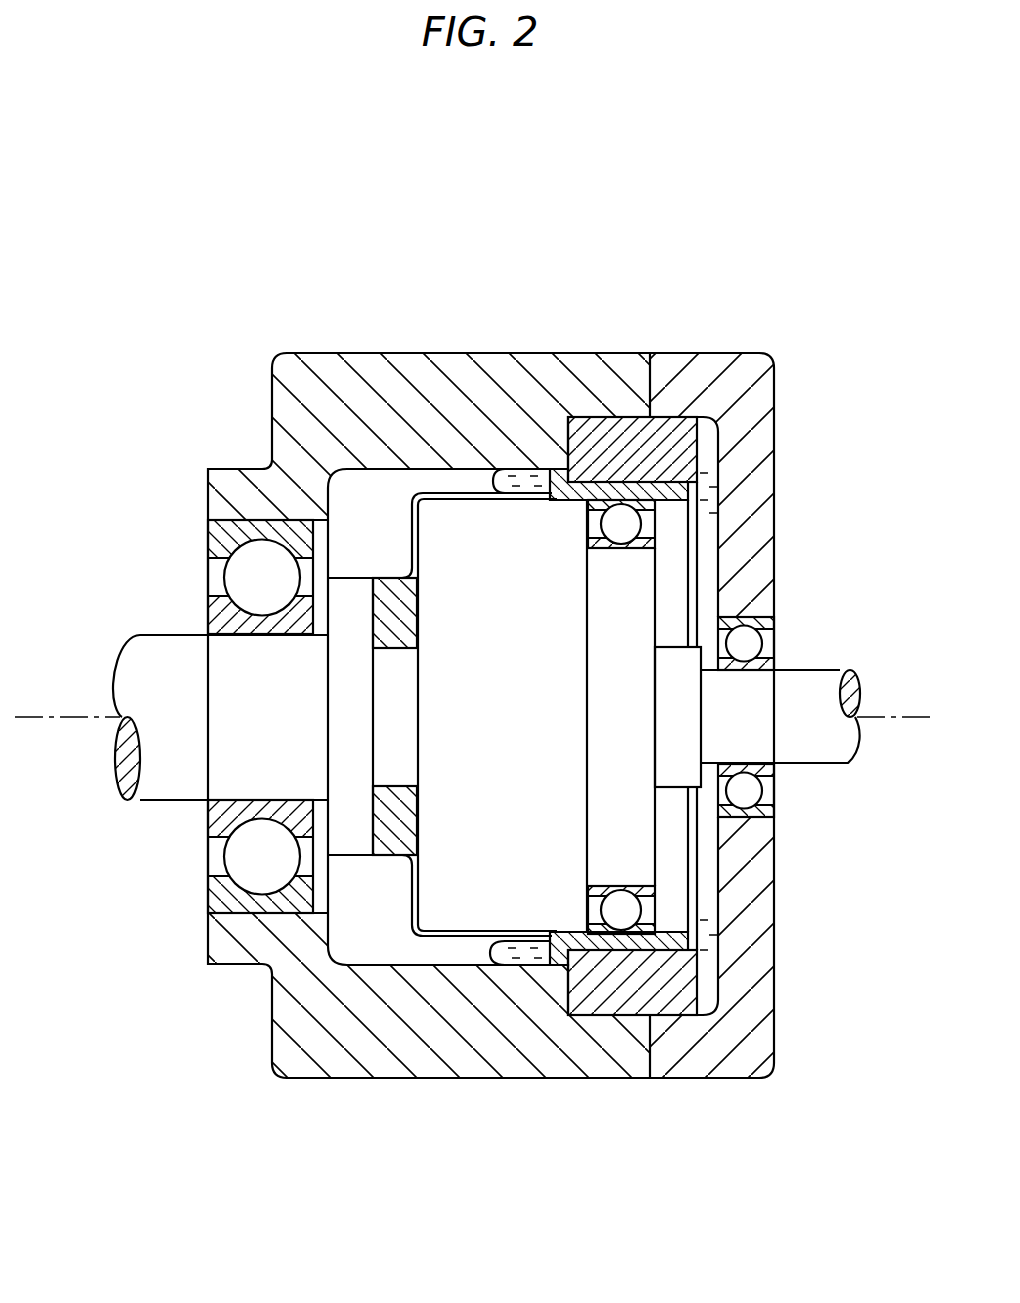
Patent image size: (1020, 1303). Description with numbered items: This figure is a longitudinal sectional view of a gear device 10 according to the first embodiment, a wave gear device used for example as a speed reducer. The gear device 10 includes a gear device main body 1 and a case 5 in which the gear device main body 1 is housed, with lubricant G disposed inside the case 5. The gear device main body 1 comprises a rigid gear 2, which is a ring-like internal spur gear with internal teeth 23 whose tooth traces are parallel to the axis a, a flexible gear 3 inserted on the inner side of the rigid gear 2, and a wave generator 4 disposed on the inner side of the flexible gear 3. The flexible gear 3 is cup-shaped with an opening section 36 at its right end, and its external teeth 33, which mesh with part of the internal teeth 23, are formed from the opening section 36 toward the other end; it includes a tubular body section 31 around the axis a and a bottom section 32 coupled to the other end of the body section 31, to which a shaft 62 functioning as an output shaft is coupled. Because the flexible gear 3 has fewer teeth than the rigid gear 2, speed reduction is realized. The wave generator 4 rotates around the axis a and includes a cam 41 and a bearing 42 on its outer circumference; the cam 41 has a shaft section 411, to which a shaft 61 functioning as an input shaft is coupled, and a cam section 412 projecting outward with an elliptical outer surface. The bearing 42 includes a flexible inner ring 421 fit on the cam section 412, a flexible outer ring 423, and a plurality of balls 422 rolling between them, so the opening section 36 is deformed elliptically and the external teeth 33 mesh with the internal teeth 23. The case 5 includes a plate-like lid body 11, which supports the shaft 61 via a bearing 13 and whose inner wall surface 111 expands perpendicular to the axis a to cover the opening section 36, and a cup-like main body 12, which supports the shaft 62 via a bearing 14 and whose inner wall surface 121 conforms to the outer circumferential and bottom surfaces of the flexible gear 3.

The gear device 10 is at (806, 181).
The case 5 is at (744, 351).
The lid body 11 is at (768, 398).
The inner wall surface 111 is at (712, 456).
The main body 12 is at (285, 370).
The inner wall surface 121 is at (523, 962).
The bearing 14 is at (226, 542).
The shaft 62 is at (163, 662).
The gear device main body 1 is at (391, 487).
The flexible gear 3 is at (443, 709).
The body section 31 is at (462, 945).
The bottom section 32 is at (410, 895).
The rigid gear 2 is at (617, 416).
The internal teeth 23 is at (573, 455).
The external teeth 33 is at (657, 476).
The opening section 36 is at (690, 540).
The wave generator 4 is at (659, 609).
The cam 41 is at (749, 715).
The shaft section 411 is at (633, 835).
The cam section 412 is at (683, 768).
The bearing 42 is at (650, 838).
The inner ring 421 is at (680, 944).
The balls 422 is at (658, 900).
The outer ring 423 is at (607, 944).
The bearing 13 is at (766, 626).
The shaft 61 is at (810, 680).
The lubricant G is at (703, 930).
The axis a is at (918, 716).